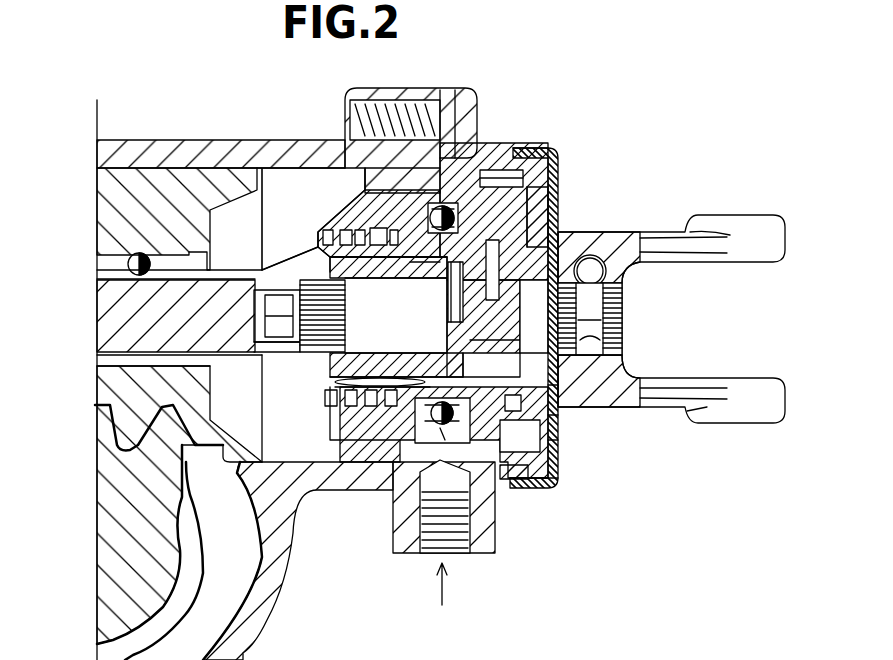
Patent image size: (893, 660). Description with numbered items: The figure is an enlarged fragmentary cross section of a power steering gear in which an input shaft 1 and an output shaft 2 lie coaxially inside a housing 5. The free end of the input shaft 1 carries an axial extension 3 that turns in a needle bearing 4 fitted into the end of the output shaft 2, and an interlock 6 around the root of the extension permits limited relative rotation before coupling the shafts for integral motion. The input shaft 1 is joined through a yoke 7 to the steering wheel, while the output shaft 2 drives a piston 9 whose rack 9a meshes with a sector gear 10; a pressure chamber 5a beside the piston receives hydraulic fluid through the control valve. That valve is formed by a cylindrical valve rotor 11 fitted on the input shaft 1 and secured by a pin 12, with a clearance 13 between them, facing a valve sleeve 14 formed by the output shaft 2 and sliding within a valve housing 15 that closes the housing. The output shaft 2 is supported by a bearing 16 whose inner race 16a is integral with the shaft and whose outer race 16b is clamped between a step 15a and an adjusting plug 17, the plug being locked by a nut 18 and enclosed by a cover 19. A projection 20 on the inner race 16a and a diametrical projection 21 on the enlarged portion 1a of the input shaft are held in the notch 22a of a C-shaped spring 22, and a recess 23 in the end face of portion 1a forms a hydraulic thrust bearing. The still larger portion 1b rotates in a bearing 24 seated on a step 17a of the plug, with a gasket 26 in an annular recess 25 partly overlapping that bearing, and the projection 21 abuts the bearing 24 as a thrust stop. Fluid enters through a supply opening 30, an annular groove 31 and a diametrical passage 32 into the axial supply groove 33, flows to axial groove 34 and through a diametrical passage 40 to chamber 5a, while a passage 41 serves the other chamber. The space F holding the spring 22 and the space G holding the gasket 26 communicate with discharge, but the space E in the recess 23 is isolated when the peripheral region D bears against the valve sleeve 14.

The input shaft 1 is at (623, 308).
The portion of increased diameter 1a is at (552, 394).
The portion of still greater diameter 1b is at (552, 419).
The output shaft 2 is at (107, 300).
The axial extension 3 is at (262, 306).
The needle bearing 4 is at (262, 348).
The housing 5 is at (160, 146).
The pressure chamber 5a is at (288, 172).
The interlock 6 is at (304, 366).
The yoke 7 is at (748, 218).
The piston 9 is at (118, 212).
The rack 9a is at (115, 425).
The sector gear 10 is at (185, 440).
The valve rotor 11 is at (355, 262).
The pin 12 is at (468, 312).
The clearance 13 is at (398, 356).
The valve sleeve 14 is at (318, 260).
The valve housing 15 is at (478, 548).
The step 15a is at (462, 112).
The bearing 16 is at (458, 448).
The inner race 16a is at (428, 230).
The outer race 16b is at (372, 192).
The adjusting plug 17 is at (556, 215).
The step 17a is at (553, 193).
The nut 18 is at (530, 148).
The cover 19 is at (560, 480).
The projection 20 is at (478, 190).
The diametrical projection 21 is at (480, 348).
The C-shaped spring 22 is at (506, 482).
The notch 22a is at (549, 166).
The recess 23 is at (482, 368).
The bearing 24 is at (552, 441).
The annular recess 25 is at (582, 358).
The gasket 26 is at (575, 250).
The supply opening 30 is at (392, 498).
The annular groove 31 is at (372, 412).
The diametrical passage 32 is at (405, 262).
The axial supply groove 33 is at (380, 262).
The axial groove 34 is at (372, 355).
The diametrical passage 40 is at (345, 408).
The passage 41 is at (318, 262).
The peripheral region D is at (491, 368).
The space E is at (464, 295).
The space F is at (520, 432).
The space G is at (534, 316).